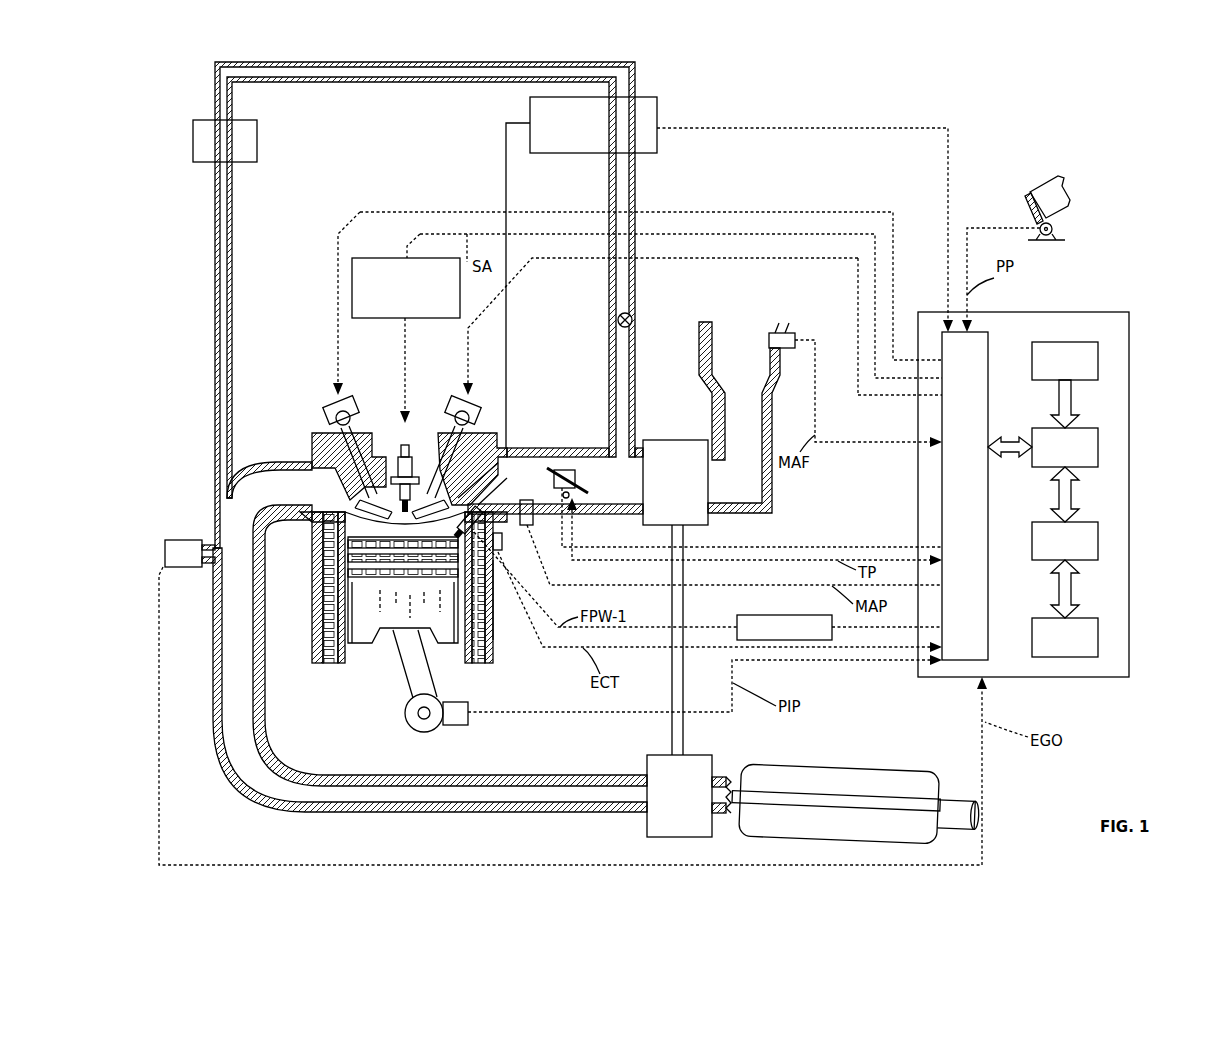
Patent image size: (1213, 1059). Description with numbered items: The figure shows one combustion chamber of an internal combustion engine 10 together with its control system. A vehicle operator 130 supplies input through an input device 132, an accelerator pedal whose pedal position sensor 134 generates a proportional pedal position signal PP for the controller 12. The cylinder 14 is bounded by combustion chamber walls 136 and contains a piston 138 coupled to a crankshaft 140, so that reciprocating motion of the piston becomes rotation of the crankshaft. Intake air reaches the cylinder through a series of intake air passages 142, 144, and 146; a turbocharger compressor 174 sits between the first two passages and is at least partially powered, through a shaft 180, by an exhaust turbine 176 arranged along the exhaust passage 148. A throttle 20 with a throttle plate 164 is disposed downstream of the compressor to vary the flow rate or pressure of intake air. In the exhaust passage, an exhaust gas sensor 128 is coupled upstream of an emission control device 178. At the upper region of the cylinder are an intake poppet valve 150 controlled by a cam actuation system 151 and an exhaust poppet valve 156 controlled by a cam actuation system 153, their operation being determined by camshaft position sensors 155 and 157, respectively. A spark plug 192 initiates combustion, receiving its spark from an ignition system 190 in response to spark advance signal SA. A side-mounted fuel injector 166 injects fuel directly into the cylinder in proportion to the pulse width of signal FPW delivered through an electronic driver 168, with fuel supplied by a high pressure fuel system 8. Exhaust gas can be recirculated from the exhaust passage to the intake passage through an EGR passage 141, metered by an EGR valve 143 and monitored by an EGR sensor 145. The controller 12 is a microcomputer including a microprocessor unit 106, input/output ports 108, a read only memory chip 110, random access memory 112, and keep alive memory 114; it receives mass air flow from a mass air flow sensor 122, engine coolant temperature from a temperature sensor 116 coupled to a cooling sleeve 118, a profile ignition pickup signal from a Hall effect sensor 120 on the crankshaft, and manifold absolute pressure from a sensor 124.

The high pressure fuel system 8 is at (593, 125).
The internal combustion engine 10 is at (148, 152).
The controller 12 is at (1054, 483).
The cylinder 14 is at (394, 637).
The throttle 20 is at (570, 466).
The microprocessor unit 106 is at (1098, 444).
The input/output ports 108 is at (990, 342).
The read only memory chip 110 is at (1098, 356).
The random access memory 112 is at (1098, 538).
The keep alive memory 114 is at (1098, 638).
The temperature sensor 116 is at (502, 560).
The cooling sleeve 118 is at (496, 615).
The Hall effect sensor 120 is at (458, 727).
The mass air flow sensor 122 is at (795, 333).
The manifold absolute pressure sensor 124 is at (538, 560).
The exhaust gas sensor 128 is at (165, 545).
The vehicle operator 130 is at (1070, 200).
The input device 132 is at (1028, 208).
The pedal position sensor 134 is at (1056, 228).
The combustion chamber walls 136 is at (350, 650).
The piston 138 is at (390, 615).
The crankshaft 140 is at (413, 730).
The EGR passage 141 is at (635, 185).
The intake air passage 142 is at (739, 417).
The EGR valve 143 is at (632, 318).
The intake passage 144 is at (575, 470).
The EGR sensor 145 is at (257, 138).
The intake air passage 146 is at (555, 493).
The exhaust passage 148 is at (430, 637).
The intake poppet valve 150 is at (410, 462).
The cam actuation system 151 is at (456, 402).
The cam actuation system 153 is at (346, 402).
The camshaft position sensor 155 is at (470, 415).
The exhaust poppet valve 156 is at (330, 465).
The camshaft position sensor 157 is at (336, 415).
The throttle plate 164 is at (556, 470).
The fuel injector 166 is at (467, 515).
The electronic driver 168 is at (740, 615).
The compressor 174 is at (665, 440).
The exhaust turbine 176 is at (647, 825).
The emission control device 178 is at (885, 772).
The shaft 180 is at (684, 725).
The ignition system 190 is at (364, 258).
The spark plug 192 is at (400, 455).